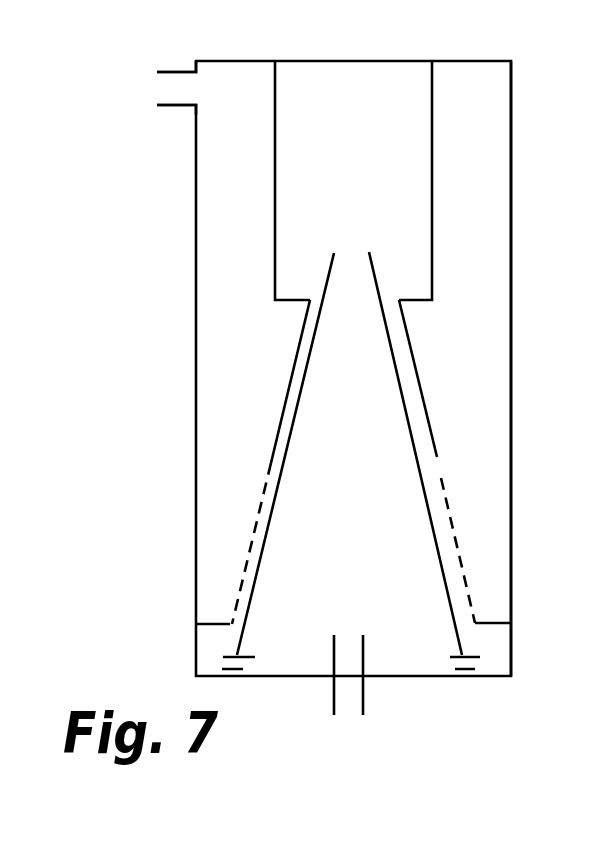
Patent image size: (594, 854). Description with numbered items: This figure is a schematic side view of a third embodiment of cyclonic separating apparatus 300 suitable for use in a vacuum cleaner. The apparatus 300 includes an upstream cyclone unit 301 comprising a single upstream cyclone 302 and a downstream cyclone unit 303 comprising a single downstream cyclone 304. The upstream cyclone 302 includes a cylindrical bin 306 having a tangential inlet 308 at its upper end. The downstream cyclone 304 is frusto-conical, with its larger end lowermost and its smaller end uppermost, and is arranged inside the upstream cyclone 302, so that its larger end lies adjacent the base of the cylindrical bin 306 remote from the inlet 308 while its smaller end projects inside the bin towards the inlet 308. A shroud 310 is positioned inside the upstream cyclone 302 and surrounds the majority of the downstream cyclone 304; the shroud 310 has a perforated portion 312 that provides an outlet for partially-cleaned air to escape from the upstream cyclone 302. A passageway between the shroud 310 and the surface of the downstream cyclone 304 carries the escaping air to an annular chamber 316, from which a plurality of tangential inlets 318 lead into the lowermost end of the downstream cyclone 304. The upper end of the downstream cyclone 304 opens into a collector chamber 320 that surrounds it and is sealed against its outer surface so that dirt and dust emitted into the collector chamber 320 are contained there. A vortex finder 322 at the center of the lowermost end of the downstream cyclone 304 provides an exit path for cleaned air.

The apparatus 300 is at (168, 283).
The upstream cyclone unit 301 is at (484, 112).
The upstream cyclone 302 is at (512, 185).
The downstream cyclone unit 303 is at (418, 390).
The downstream cyclone 304 is at (424, 475).
The cylindrical bin 306 is at (511, 560).
The tangential inlet 308 is at (168, 80).
The shroud 310 is at (277, 432).
The perforated portion 312 is at (254, 525).
The annular chamber 316 is at (206, 641).
The tangential inlets 318 is at (243, 665).
The collector chamber 320 is at (418, 76).
The vortex finder 322 is at (364, 703).